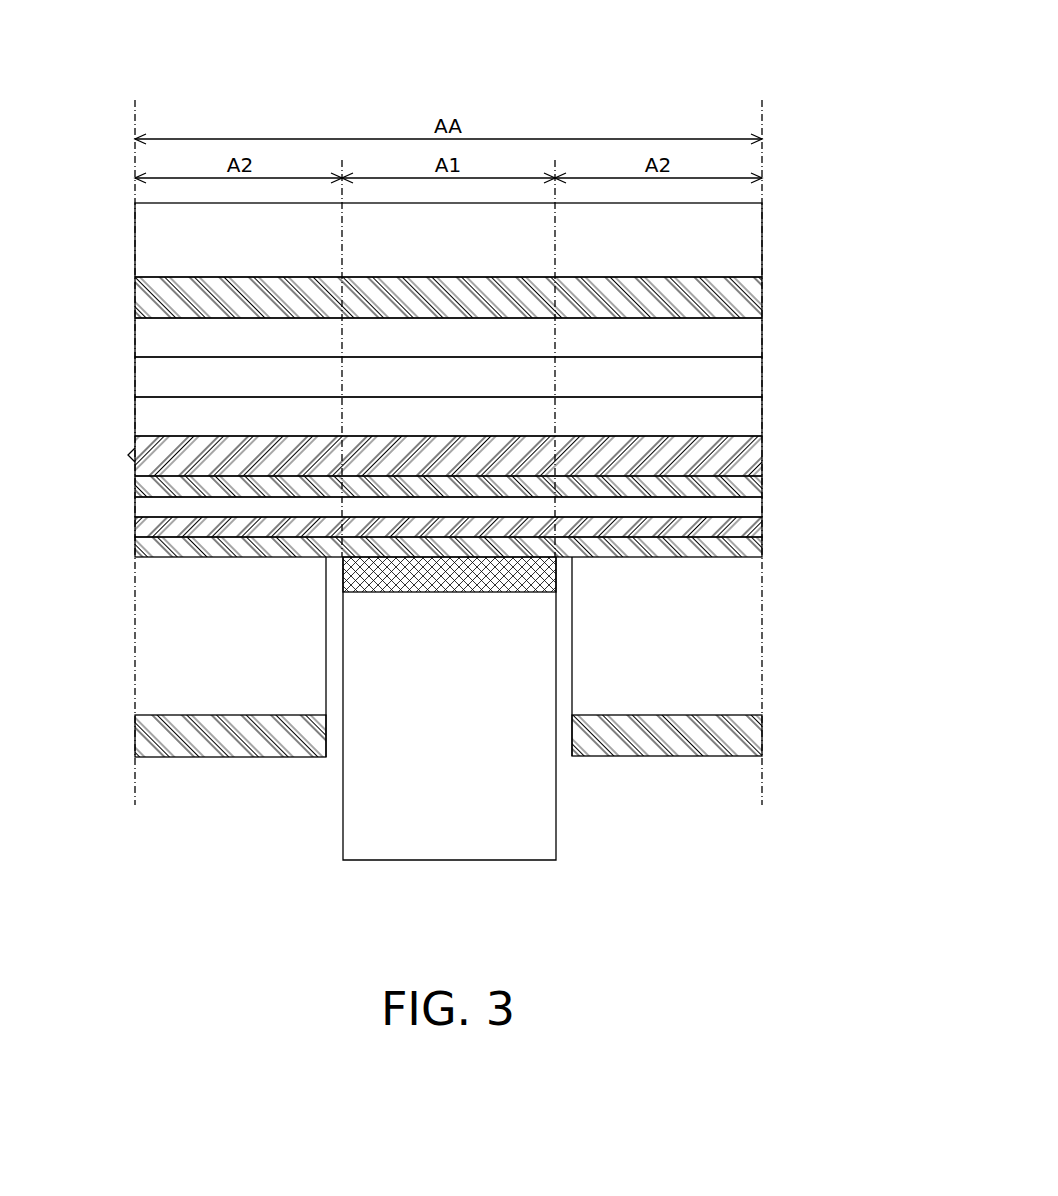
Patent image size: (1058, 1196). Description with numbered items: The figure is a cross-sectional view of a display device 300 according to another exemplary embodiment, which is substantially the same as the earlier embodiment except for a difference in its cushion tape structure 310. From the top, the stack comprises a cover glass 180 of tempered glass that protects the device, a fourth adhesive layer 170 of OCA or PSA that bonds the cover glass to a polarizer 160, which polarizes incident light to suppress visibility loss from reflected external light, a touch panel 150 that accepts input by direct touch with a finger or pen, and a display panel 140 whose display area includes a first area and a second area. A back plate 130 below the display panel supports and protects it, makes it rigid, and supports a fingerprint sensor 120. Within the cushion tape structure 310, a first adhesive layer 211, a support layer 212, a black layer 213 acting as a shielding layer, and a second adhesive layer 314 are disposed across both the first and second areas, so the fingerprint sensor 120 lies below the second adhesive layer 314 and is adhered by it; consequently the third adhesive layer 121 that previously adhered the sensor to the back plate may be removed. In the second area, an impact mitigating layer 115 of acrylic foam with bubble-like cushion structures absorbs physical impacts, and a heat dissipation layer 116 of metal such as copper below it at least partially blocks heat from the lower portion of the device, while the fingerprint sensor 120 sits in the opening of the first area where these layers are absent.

The display device 300 is at (737, 49).
The cover glass 180 is at (742, 241).
The fourth adhesive layer 170 is at (742, 292).
The polarizer 160 is at (742, 335).
The touch panel 150 is at (742, 374).
The display panel 140 is at (742, 415).
The back plate 130 is at (742, 457).
The first adhesive layer 211 is at (742, 485).
The support layer 212 is at (742, 505).
The black layer 213 is at (742, 525).
The second adhesive layer 314 is at (742, 545).
The cushion tape structure 310 is at (510, 615).
The third adhesive layer 121 is at (365, 579).
The fingerprint sensor 120 is at (365, 659).
The impact mitigating layer 115 is at (742, 658).
The heat dissipation layer 116 is at (483, 736).